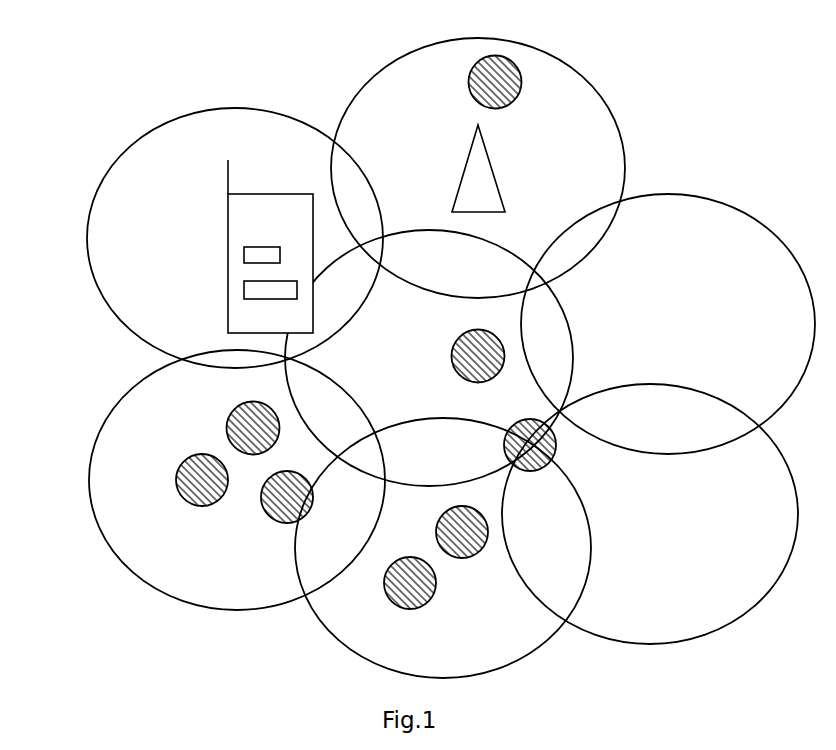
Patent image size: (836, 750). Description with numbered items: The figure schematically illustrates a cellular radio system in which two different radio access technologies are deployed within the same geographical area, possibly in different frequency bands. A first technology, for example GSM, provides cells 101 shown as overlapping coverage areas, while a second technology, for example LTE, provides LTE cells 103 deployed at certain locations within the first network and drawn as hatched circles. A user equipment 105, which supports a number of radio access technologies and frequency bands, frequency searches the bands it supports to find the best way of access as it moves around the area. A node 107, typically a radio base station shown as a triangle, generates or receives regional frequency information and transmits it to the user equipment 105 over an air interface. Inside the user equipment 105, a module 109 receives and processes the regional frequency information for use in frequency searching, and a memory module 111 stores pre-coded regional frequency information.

The cells 101 is at (107, 265).
The LTE cells 103 is at (507, 70).
The user equipment 105 is at (228, 212).
The node 107 is at (487, 178).
The module 109 is at (243, 248).
The memory module 111 is at (243, 300).